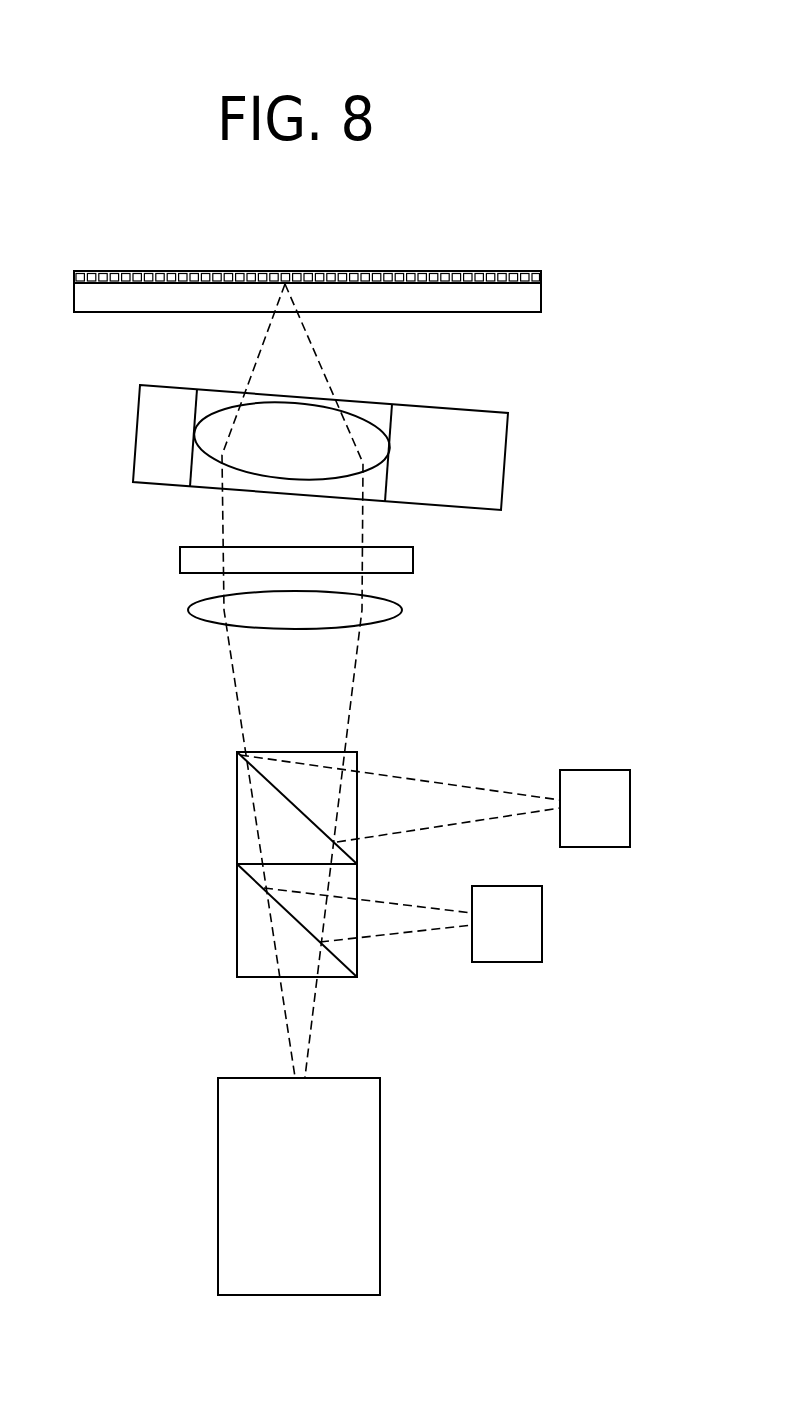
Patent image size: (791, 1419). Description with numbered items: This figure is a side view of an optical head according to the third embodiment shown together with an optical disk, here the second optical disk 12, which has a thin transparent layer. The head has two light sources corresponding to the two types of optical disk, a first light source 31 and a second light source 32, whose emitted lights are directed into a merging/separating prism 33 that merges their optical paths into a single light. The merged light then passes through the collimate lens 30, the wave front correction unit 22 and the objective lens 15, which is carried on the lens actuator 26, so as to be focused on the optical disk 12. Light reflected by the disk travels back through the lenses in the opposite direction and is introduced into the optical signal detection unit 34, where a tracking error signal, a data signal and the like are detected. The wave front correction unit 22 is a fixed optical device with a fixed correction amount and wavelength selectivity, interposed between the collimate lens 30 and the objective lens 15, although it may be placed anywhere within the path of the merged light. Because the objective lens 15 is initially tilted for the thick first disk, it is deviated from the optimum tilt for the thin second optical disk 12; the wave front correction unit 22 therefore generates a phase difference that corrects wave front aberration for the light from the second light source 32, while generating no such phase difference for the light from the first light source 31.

The second optical disk 12 is at (200, 296).
The objective lens 15 is at (365, 430).
The lens actuator 26 is at (495, 443).
The wave front correction unit 22 is at (413, 557).
The collimate lens 30 is at (402, 609).
The first light source 31 is at (630, 788).
The second light source 32 is at (543, 902).
The merging/separating prism 33 is at (348, 955).
The optical signal detection unit 34 is at (370, 1120).